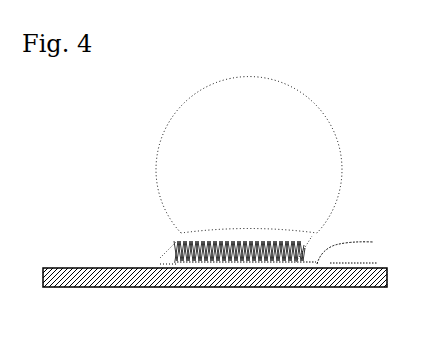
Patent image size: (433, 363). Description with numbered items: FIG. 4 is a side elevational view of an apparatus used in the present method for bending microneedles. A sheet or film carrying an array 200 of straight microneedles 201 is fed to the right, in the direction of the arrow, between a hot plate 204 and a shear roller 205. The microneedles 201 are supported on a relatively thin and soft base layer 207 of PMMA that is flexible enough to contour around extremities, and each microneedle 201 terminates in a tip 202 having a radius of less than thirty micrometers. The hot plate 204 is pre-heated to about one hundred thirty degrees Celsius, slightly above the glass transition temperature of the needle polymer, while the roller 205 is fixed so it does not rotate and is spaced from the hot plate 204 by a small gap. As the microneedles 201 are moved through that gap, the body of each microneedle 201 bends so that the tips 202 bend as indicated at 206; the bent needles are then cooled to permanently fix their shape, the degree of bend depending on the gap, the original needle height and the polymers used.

The array 200 is at (163, 271).
The microneedles 201 is at (148, 255).
The tips 202 is at (176, 231).
The hot plate 204 is at (298, 295).
The shear roller 205 is at (249, 155).
The bend 206 is at (309, 237).
The base layer 207 is at (363, 247).